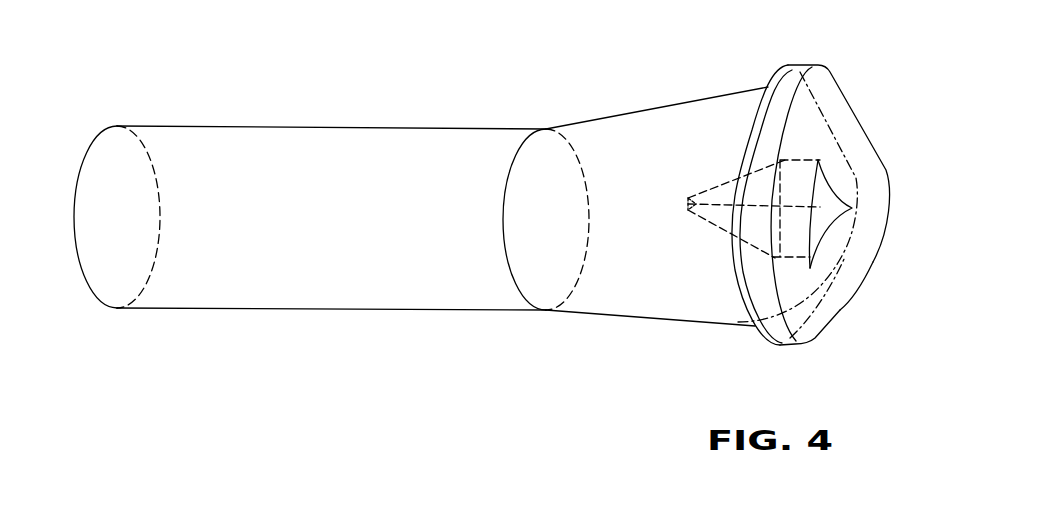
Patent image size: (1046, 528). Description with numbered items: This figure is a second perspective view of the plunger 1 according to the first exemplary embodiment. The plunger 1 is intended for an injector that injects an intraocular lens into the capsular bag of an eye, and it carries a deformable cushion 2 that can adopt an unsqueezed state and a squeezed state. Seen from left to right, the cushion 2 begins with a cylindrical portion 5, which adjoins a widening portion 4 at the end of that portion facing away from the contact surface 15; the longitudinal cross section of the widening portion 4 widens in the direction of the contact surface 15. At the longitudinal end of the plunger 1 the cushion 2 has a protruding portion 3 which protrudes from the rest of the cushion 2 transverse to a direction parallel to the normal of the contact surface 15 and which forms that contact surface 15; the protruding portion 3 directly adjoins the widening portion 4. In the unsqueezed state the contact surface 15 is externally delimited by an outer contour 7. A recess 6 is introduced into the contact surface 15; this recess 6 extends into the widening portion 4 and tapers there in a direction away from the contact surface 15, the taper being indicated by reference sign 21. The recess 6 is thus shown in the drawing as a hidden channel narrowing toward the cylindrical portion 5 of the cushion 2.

The plunger 1 is at (380, 70).
The cushion 2 is at (614, 74).
The protruding portion 3 is at (804, 65).
The widening portion 4 is at (700, 100).
The cylindrical portion 5 is at (262, 127).
The recess 6 is at (855, 209).
The outer contour 7 is at (873, 269).
The contact surface 15 is at (848, 127).
The taper of the recess 21 is at (719, 255).